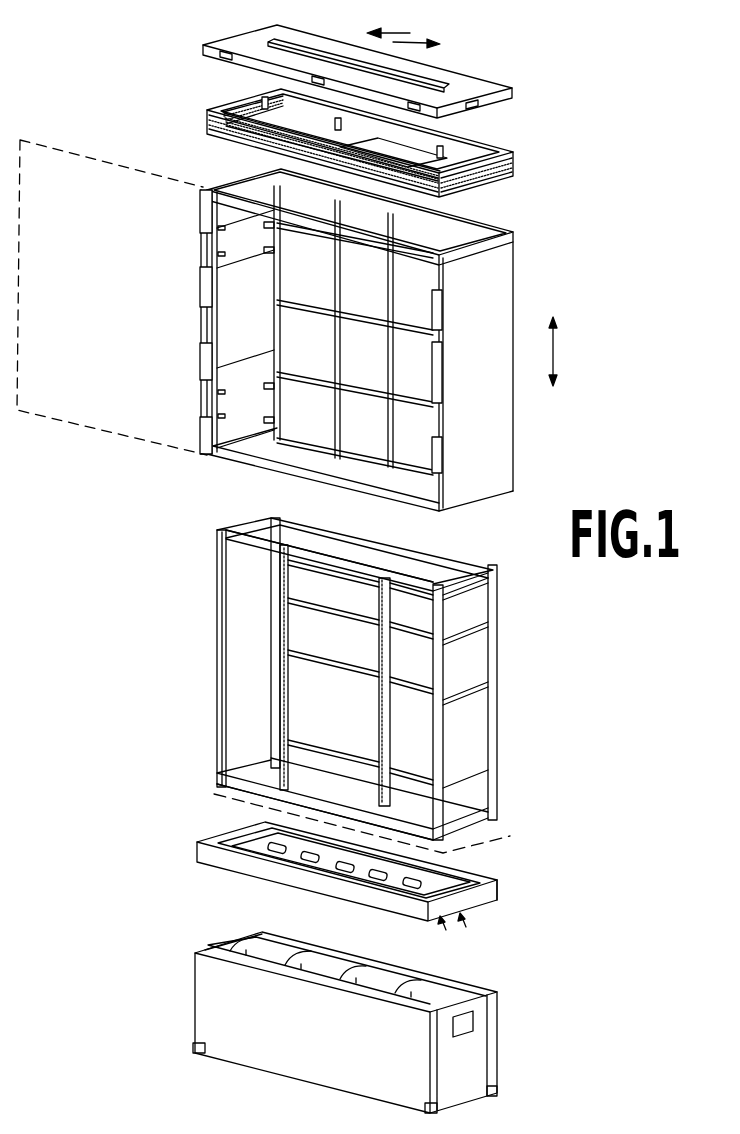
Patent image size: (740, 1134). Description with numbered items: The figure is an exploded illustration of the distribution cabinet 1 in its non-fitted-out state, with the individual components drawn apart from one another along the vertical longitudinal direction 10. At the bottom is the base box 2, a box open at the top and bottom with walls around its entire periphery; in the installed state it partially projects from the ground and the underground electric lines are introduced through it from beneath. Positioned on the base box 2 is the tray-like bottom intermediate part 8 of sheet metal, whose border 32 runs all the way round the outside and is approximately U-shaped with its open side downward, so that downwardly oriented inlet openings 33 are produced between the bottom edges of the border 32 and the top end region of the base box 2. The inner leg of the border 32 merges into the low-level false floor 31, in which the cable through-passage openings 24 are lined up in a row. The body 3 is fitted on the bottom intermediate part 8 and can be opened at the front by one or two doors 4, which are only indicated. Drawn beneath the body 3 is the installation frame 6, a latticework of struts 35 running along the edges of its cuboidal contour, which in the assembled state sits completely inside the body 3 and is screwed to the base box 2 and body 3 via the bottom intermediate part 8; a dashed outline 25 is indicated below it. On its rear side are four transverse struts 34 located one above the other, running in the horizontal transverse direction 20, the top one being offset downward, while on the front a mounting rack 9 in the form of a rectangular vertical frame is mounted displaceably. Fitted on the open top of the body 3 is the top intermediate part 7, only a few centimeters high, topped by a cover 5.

The distribution cabinet 1 is at (565, 112).
The base box 2 is at (153, 1003).
The body 3 is at (535, 440).
The doors 4 is at (86, 402).
The cover lid 5 is at (165, 43).
The installation frame 6 is at (313, 685).
The top intermediate part 7 is at (165, 108).
The bottom intermediate part 8 is at (324, 883).
The mounting rack 9 is at (377, 740).
The vertical longitudinal direction 10 is at (556, 352).
The horizontal transverse direction 20 is at (412, 33).
The cable through-passage openings 24 is at (340, 867).
The frame footprint outline 25 is at (493, 833).
The false floor 31 is at (257, 848).
The border 32 is at (483, 880).
The inlet openings 33 is at (483, 912).
The transverse struts 34 is at (343, 667).
The longitudinal beams 35 is at (327, 559).